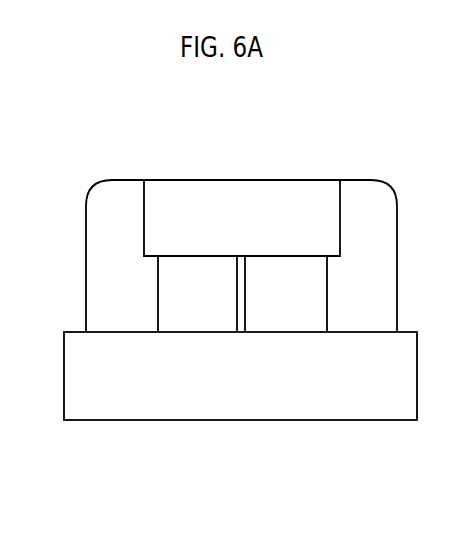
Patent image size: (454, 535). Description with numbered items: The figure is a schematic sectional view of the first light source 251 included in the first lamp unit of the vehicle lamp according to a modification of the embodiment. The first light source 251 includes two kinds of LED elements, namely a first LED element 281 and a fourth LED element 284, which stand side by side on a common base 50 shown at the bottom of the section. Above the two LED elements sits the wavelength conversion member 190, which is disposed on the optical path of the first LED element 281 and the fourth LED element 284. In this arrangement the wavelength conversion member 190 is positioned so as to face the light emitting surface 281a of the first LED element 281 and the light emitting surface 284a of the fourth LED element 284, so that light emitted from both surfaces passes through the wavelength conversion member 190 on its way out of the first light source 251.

The wavelength conversion member 190 is at (243, 181).
The first LED element 281 is at (200, 333).
The light emitting surface of the first LED element 281a is at (187, 251).
The fourth LED element 284 is at (286, 333).
The light emitting surface of the fourth LED element 284a is at (277, 251).
The base 50 is at (155, 421).
The first light source 251 is at (258, 491).